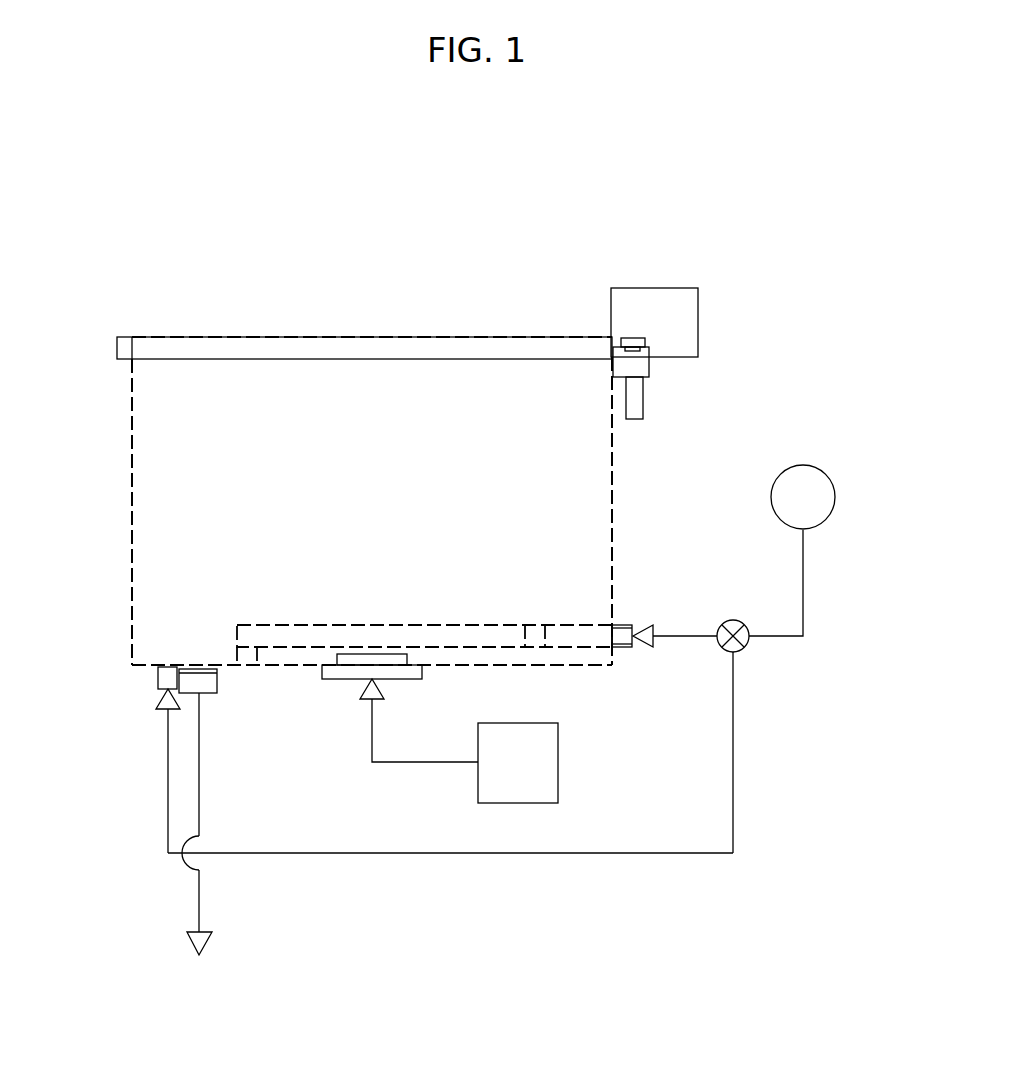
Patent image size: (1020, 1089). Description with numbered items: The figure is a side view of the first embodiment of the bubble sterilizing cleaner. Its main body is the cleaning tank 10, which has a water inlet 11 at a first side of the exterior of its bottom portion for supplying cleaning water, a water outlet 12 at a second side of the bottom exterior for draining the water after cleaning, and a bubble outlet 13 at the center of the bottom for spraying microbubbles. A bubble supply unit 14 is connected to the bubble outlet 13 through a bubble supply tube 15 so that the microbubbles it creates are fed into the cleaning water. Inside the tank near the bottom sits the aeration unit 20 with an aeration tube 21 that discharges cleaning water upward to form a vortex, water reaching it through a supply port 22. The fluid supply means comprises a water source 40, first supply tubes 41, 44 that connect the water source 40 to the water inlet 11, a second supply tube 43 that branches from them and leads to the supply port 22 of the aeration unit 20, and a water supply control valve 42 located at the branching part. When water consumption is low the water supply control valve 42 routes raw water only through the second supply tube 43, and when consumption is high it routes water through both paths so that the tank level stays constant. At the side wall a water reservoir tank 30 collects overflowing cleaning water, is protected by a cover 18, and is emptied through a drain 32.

The cleaning tank 10 is at (131, 490).
The water inlet 11 is at (158, 681).
The water outlet 12 is at (217, 683).
The bubble outlet 13 is at (337, 655).
The bubble supply unit 14 is at (558, 785).
The bubble supply tube 15 is at (413, 762).
The cover 18 is at (653, 288).
The aeration unit 20 is at (572, 610).
The aeration tube 21 is at (262, 627).
The supply port 22 is at (622, 647).
The water reservoir tank 30 is at (649, 369).
The drain 32 is at (643, 405).
The water source 40 is at (833, 482).
The first supply tube 41 is at (803, 597).
The water supply control valve 42 is at (748, 642).
The second supply tube 43 is at (670, 636).
The first supply tube 44 is at (531, 854).